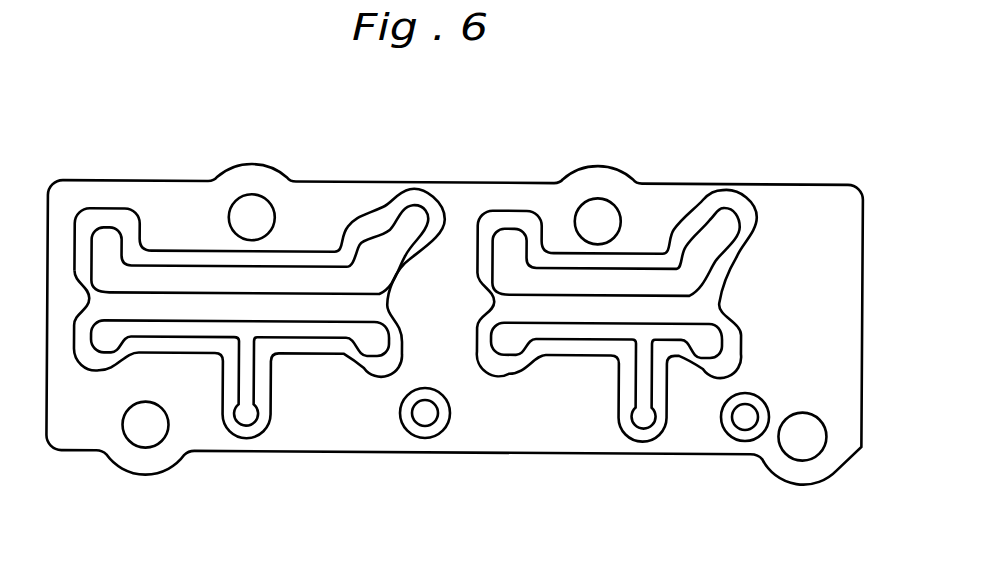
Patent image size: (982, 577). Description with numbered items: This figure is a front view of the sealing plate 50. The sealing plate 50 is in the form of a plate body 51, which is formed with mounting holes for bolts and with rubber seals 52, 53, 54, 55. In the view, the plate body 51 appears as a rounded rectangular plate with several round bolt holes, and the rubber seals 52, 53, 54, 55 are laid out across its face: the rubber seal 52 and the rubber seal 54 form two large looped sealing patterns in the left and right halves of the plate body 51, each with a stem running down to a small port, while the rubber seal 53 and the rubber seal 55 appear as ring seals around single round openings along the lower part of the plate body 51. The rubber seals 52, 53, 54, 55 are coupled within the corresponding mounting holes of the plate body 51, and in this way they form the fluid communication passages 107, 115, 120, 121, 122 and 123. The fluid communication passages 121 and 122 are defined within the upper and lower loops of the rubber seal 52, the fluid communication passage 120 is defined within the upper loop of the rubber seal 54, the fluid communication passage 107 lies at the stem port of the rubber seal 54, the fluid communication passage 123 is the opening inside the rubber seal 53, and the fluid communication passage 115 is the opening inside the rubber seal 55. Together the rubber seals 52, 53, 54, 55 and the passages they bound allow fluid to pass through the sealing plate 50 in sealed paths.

The sealing plate 50 is at (503, 181).
The plate body 51 is at (259, 319).
The rubber seal 52 is at (259, 246).
The fluid communication passage 121 is at (259, 248).
The fluid communication passage 122 is at (240, 373).
The rubber seal 53 is at (435, 445).
The fluid communication passage 123 is at (430, 412).
The rubber seal 54 is at (616, 320).
The fluid communication passage 120 is at (616, 252).
The fluid communication passage 107 is at (606, 376).
The rubber seal 55 is at (767, 433).
The fluid communication passage 115 is at (748, 412).